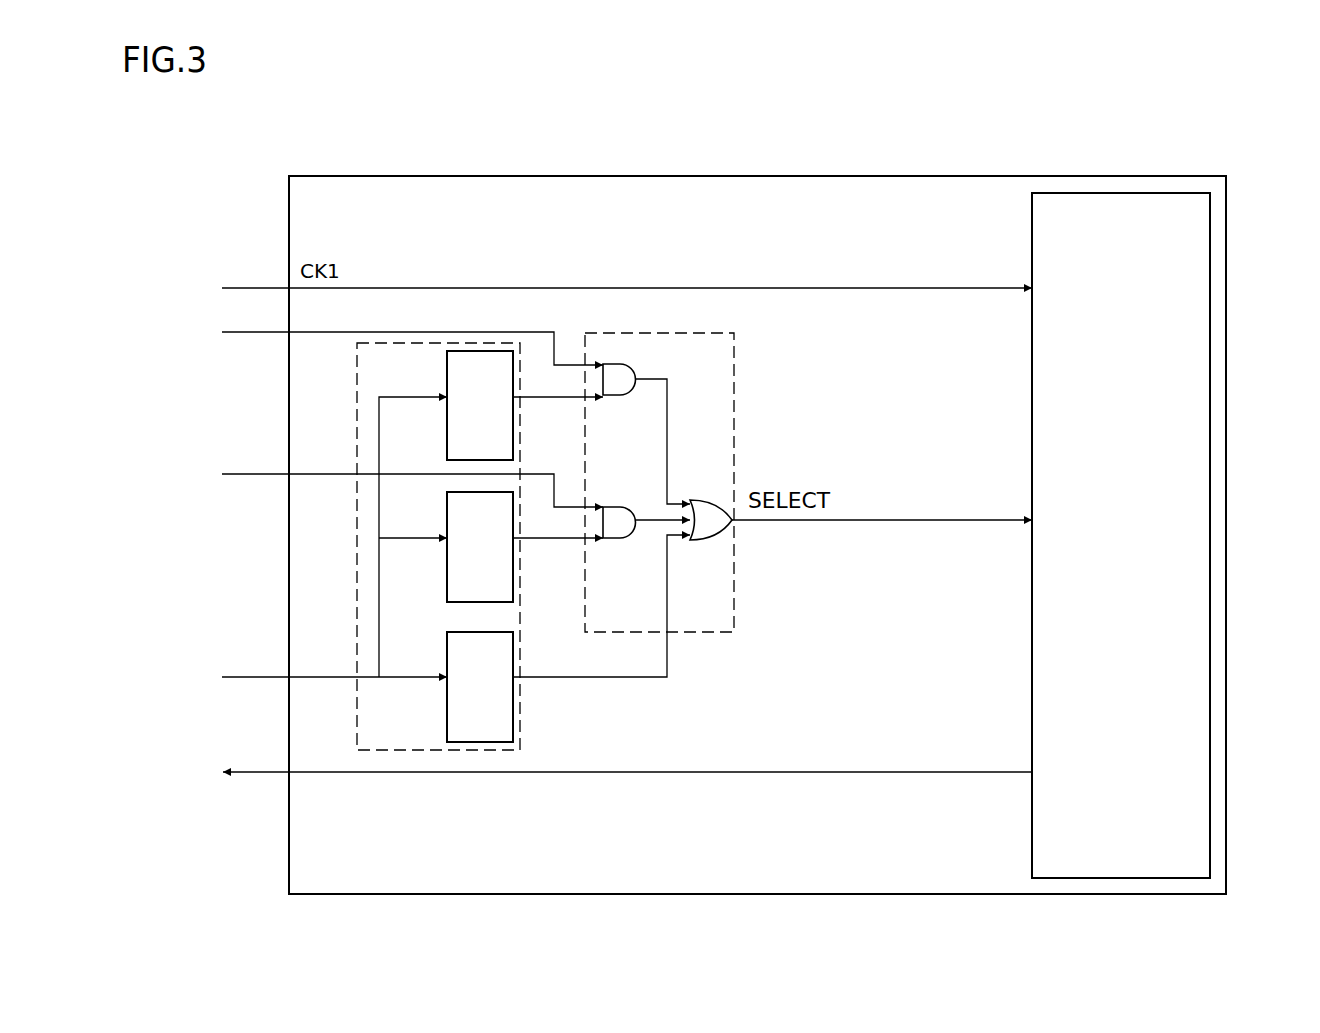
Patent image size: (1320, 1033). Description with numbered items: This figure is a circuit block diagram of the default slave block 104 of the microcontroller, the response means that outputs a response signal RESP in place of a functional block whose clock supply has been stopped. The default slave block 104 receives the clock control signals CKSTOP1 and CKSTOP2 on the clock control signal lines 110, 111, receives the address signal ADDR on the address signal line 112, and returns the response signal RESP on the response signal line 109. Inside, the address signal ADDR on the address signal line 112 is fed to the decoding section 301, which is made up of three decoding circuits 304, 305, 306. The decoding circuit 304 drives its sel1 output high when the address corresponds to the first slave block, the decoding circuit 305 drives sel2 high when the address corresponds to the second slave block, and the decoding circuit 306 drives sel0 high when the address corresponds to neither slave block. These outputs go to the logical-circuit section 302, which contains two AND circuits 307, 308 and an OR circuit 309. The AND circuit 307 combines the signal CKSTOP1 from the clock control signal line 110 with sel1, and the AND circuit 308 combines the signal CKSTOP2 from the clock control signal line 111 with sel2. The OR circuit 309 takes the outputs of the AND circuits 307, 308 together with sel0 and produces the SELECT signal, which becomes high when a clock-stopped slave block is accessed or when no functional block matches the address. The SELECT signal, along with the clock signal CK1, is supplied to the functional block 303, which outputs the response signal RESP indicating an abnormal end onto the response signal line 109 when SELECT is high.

The default slave block 104 is at (850, 143).
The functional block 303 is at (1210, 278).
The decoding section 301 is at (610, 735).
The logical-circuit section 302 is at (826, 627).
The decoding circuit 304 is at (525, 405).
The decoding circuit 305 is at (525, 547).
The decoding circuit 306 is at (568, 638).
The AND circuit 307 is at (614, 364).
The AND circuit 308 is at (614, 506).
The OR circuit 309 is at (718, 504).
The clock control signal line 110 is at (386, 343).
The clock control signal line 111 is at (386, 485).
The address signal line 112 is at (308, 545).
The response signal line 109 is at (601, 774).